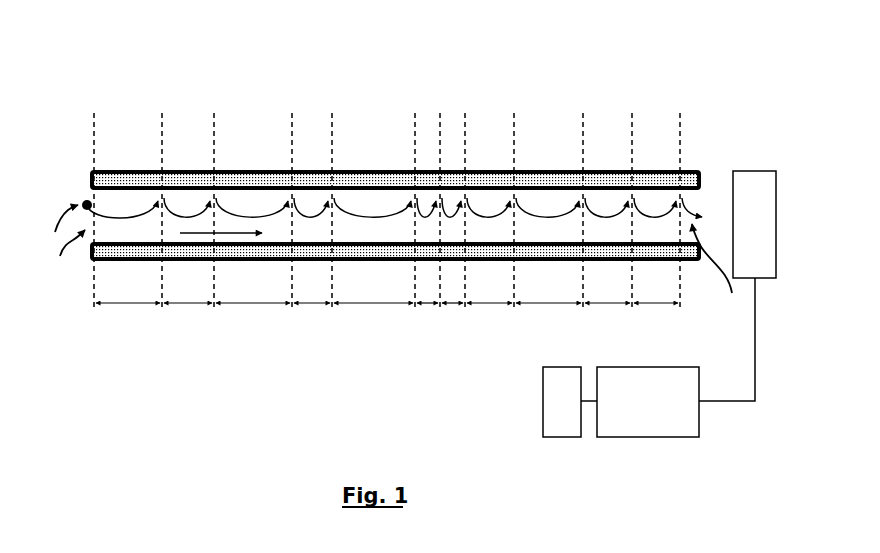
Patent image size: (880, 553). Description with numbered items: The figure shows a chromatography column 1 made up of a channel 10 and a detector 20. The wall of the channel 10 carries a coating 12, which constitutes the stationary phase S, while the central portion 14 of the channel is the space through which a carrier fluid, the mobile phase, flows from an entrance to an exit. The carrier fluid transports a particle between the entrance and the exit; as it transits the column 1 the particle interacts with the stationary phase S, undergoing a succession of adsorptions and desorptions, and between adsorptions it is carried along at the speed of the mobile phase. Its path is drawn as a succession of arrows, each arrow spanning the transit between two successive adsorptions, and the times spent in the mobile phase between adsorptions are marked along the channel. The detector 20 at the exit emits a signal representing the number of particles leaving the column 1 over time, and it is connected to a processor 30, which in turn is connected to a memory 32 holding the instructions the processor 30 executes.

The chromatography column 1 is at (217, 72).
The channel 10 is at (374, 145).
The coating 12 is at (192, 177).
The stationary phase S is at (140, 177).
The central portion 14 is at (557, 199).
The detector 20 is at (750, 251).
The processor 30 is at (651, 390).
The memory 32 is at (553, 410).